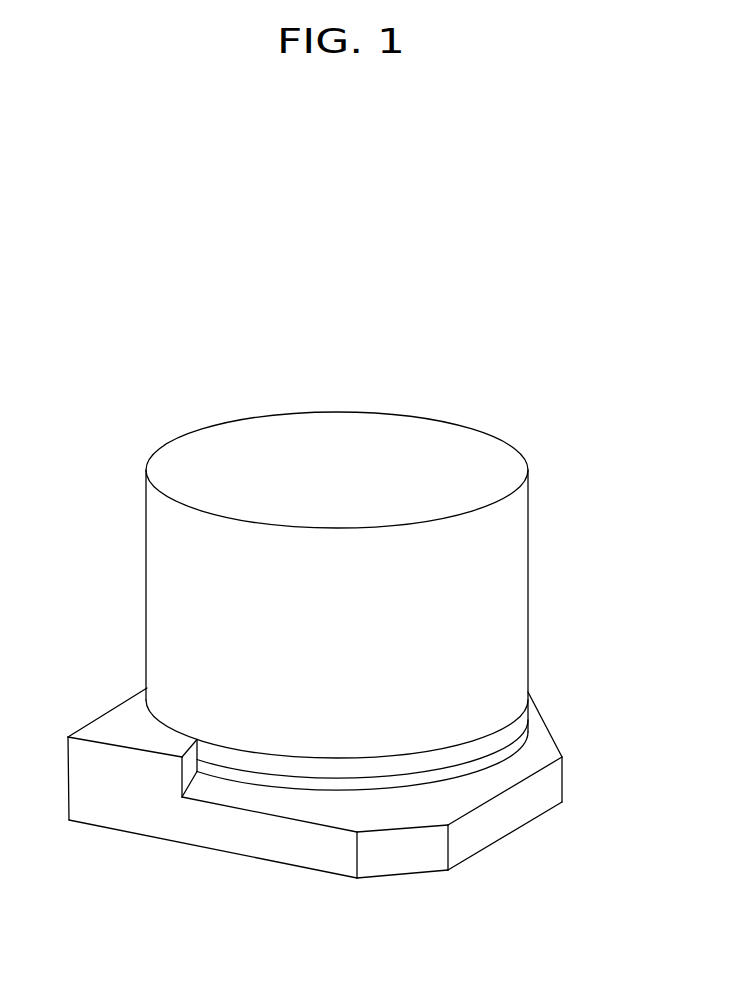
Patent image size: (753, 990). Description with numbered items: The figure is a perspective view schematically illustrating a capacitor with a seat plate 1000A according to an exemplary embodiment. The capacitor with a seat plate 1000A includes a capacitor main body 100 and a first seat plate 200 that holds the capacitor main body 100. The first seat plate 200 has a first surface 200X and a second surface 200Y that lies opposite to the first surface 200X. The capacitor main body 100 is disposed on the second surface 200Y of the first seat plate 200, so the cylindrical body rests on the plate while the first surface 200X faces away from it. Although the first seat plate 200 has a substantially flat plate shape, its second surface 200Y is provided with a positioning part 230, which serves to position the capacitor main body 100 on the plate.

The capacitor with a seat plate 1000A is at (386, 283).
The capacitor main body 100 is at (433, 475).
The first seat plate 200 is at (545, 790).
The first surface 200X is at (500, 843).
The second surface 200Y is at (533, 757).
The positioning part 230 is at (113, 728).